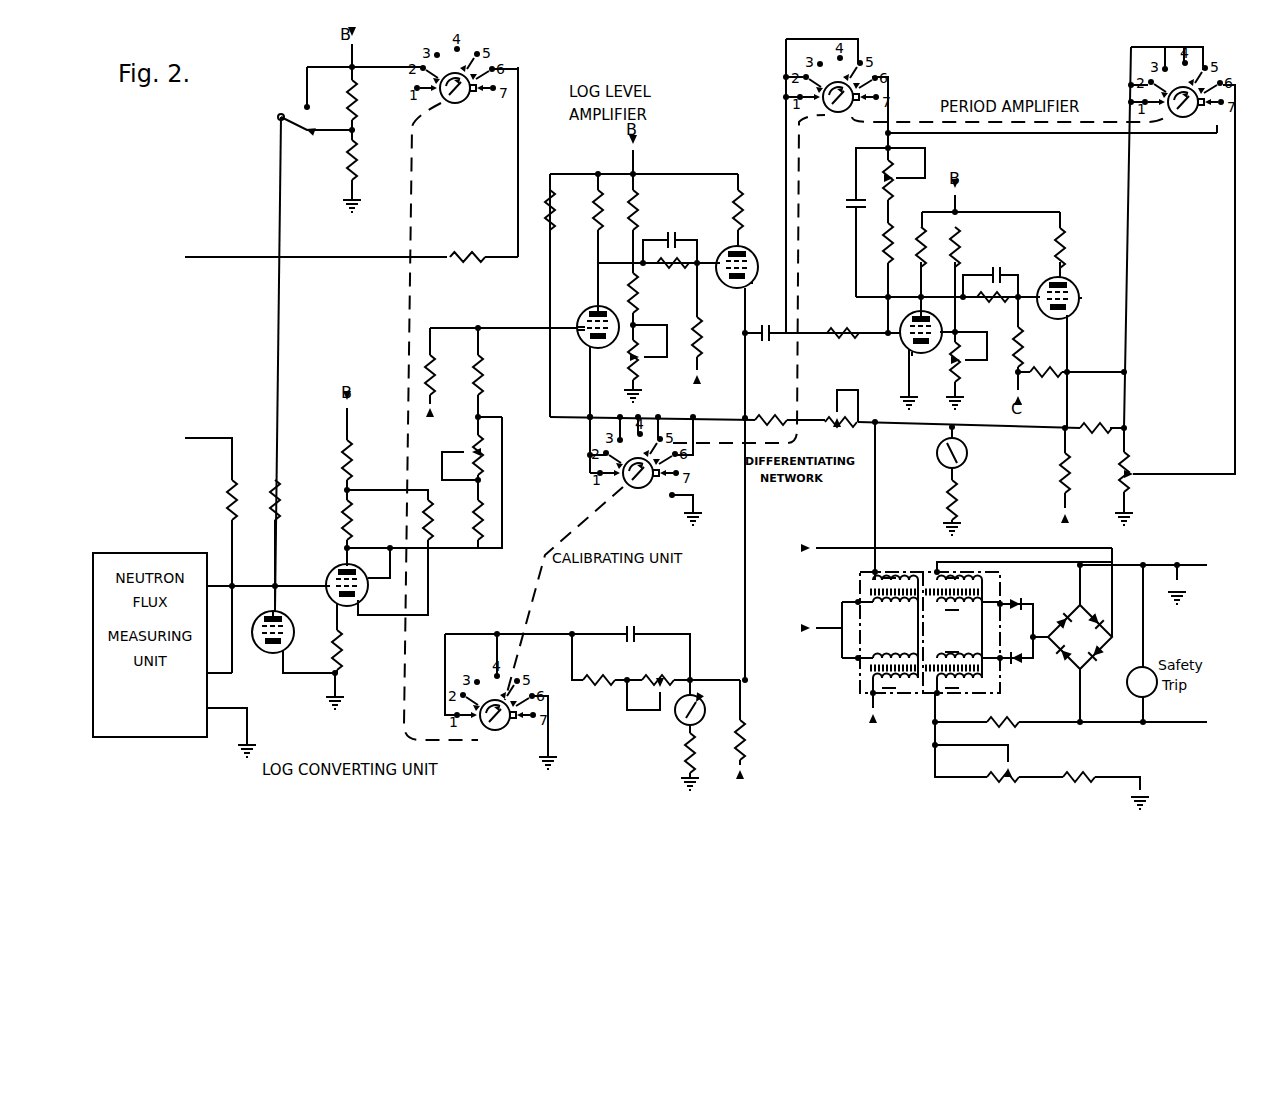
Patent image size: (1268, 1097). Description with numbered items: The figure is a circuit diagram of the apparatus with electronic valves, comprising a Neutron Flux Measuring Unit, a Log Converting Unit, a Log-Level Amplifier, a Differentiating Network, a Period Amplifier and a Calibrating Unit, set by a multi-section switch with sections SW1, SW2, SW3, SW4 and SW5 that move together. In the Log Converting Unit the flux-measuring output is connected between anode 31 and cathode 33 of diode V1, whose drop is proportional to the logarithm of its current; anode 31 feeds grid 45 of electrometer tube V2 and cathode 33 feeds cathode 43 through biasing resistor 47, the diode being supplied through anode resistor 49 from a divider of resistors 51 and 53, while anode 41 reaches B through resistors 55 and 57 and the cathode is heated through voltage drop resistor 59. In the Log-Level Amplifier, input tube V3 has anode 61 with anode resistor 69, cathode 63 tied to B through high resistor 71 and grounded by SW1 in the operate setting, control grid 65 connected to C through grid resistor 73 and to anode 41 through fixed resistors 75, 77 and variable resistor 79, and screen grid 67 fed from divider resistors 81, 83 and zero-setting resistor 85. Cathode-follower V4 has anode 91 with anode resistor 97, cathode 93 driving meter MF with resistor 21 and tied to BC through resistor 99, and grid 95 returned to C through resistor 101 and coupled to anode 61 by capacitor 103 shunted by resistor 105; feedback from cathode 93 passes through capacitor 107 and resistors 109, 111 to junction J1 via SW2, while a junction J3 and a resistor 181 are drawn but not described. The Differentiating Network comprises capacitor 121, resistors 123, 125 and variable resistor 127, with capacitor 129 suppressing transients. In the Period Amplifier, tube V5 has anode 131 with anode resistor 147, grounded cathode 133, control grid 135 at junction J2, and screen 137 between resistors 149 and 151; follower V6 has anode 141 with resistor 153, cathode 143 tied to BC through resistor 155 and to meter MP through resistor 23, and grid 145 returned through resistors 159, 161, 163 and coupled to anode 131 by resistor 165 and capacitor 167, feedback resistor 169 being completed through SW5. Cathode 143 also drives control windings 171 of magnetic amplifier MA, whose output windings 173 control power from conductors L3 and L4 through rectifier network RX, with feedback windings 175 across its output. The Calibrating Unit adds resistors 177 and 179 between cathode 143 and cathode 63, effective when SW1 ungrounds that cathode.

The resistor 51 is at (346, 98).
The resistor 53 is at (346, 159).
The resistor 181 is at (458, 254).
The anode resistor 49 is at (279, 502).
The anode 31 is at (286, 623).
The cathode 33 is at (290, 646).
The biasing resistor 47 is at (344, 645).
The resistor 55 is at (354, 448).
The resistor 57 is at (354, 508).
The voltage drop resistor 59 is at (429, 509).
The fixed resistor 77 is at (472, 531).
The variable resistor 79 is at (468, 443).
The grid resistor 73 is at (436, 358).
The fixed resistor 75 is at (484, 358).
The anode 41 is at (350, 568).
The cathode 43 is at (328, 592).
The grid 45 is at (362, 593).
The anode resistor 69 is at (593, 198).
The high resistor 71 is at (556, 213).
The fixed resistor 81 is at (640, 201).
The fixed resistor 83 is at (640, 305).
The variable resistor 85 is at (638, 372).
The anode 61 is at (610, 296).
The cathode 63 is at (592, 352).
The control grid 65 is at (580, 336).
The screen grid 67 is at (580, 320).
The anode resistor 97 is at (732, 204).
The anode 91 is at (726, 246).
The cathode 93 is at (735, 289).
The grid 95 is at (752, 284).
The high grid resistor 101 is at (700, 330).
The capacitor 103 is at (673, 238).
The high grid resistor 105 is at (676, 272).
The capacitor 107 is at (633, 624).
The fixed resistor 109 is at (605, 672).
The variable resistor 111 is at (658, 672).
The resistor 21 is at (685, 750).
The resistor 99 is at (745, 740).
The capacitor 121 is at (770, 343).
The fixed resistor 123 is at (830, 318).
The fixed resistor 125 is at (884, 242).
The variable resistor 127 is at (893, 190).
The capacitor 129 is at (846, 203).
The anode resistor 147 is at (920, 228).
The fixed resistor 149 is at (959, 229).
The anode resistor 153 is at (1064, 232).
The anode 131 is at (922, 310).
The cathode 133 is at (912, 356).
The control grid 135 is at (907, 356).
The screen 137 is at (946, 330).
The variable resistor 151 is at (959, 376).
The high grid resistor 159 is at (1022, 338).
The fixed resistor 161 is at (1034, 376).
The anode 141 is at (1045, 286).
The cathode 143 is at (1073, 310).
The control grid 145 is at (1079, 298).
The resistor 155 is at (1070, 451).
The variable resistor 163 is at (1128, 453).
The high resistor 169 is at (1098, 418).
The resistor 165 is at (1004, 266).
The capacitor 167 is at (990, 268).
The fixed resistor 177 is at (777, 405).
The variable resistor 179 is at (839, 414).
The resistor 23 is at (957, 490).
The control windings 171 is at (860, 578).
The output windings 173 is at (897, 646).
The feedback windings 175 is at (983, 580).
The diode V1 is at (270, 643).
The electrometer tube V2 is at (333, 579).
The input tube V3 is at (593, 317).
The output tube V4 is at (742, 261).
The tube V5 is at (917, 322).
The tube V6 is at (1062, 290).
The switch section SW1 is at (641, 464).
The switch section SW2 is at (502, 713).
The switch section SW3 is at (458, 82).
The switch section SW4 is at (841, 90).
The switch section SW5 is at (1186, 103).
The period meter MP is at (967, 448).
The meter MF is at (676, 720).
The self-saturating rectifier network RX is at (1080, 637).
The magnetic amplifier MA is at (926, 645).
The junction J1 is at (478, 418).
The junction J2 is at (888, 338).
The junction J3 is at (585, 413).
The supply conductor L3 is at (828, 530).
The supply conductor L4 is at (822, 612).